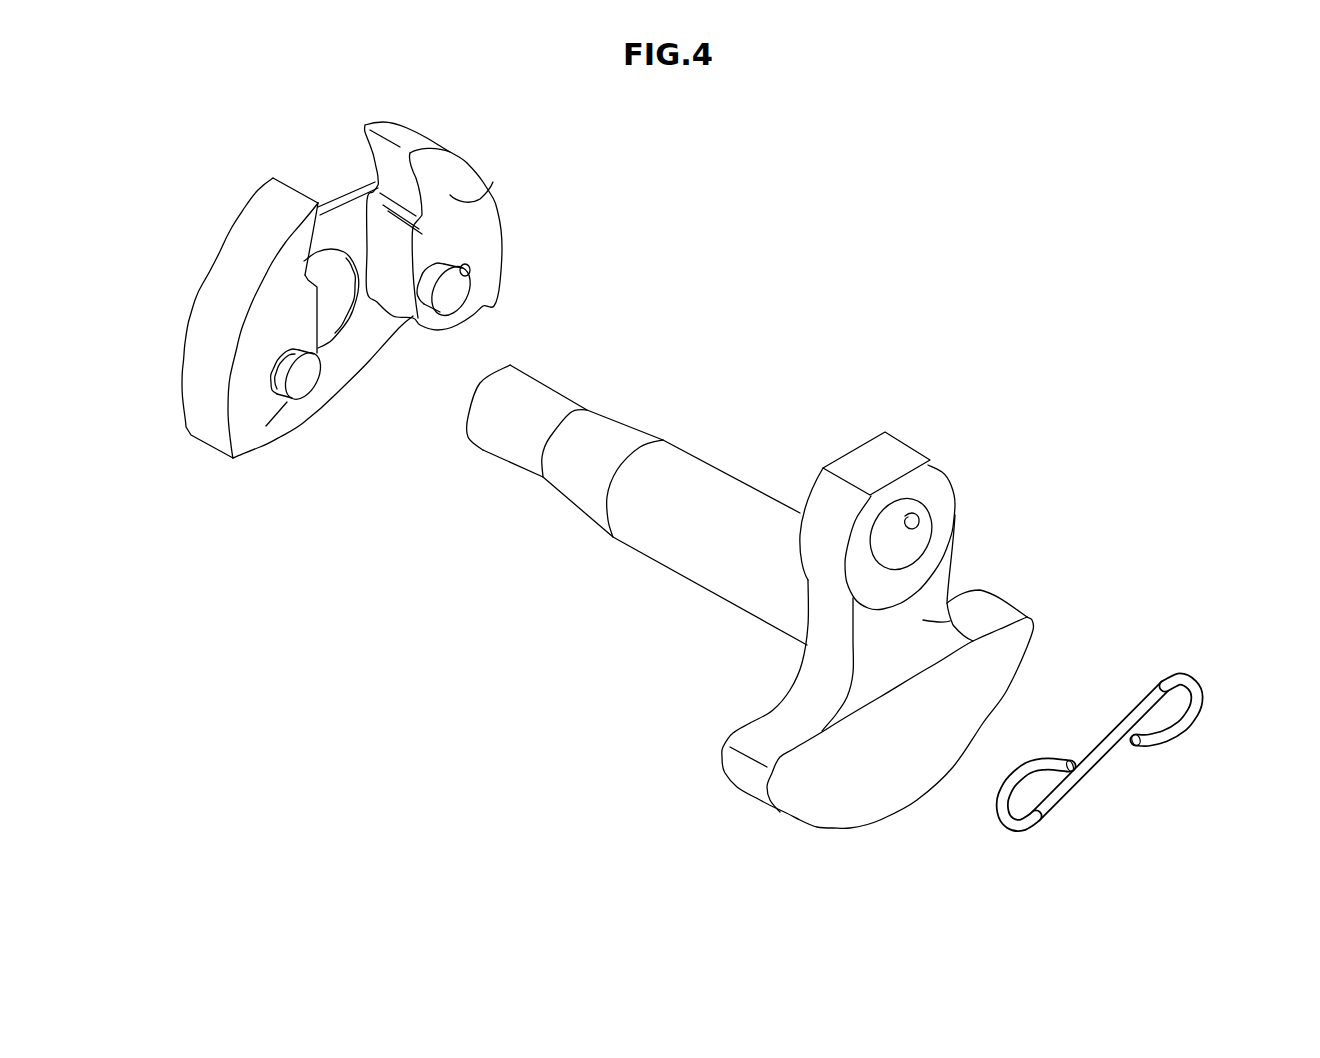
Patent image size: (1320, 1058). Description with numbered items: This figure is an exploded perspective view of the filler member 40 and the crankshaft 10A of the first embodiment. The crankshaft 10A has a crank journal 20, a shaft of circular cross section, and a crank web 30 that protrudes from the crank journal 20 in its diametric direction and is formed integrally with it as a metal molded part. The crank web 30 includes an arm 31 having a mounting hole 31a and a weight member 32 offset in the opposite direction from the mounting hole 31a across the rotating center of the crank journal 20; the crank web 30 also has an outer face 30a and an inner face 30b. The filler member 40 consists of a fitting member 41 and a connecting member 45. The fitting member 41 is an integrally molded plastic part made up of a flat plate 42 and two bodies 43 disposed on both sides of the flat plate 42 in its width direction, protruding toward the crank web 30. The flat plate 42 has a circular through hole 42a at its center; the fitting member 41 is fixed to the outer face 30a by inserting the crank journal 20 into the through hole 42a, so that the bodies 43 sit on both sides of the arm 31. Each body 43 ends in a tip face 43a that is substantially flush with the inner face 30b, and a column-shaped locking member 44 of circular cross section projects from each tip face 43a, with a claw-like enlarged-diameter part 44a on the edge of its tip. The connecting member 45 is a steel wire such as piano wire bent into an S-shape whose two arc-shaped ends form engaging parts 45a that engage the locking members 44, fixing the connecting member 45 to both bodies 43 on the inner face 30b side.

The crankshaft 10A is at (855, 311).
The crank journal 20 is at (611, 401).
The crank web 30 is at (858, 426).
The outer face 30a is at (808, 612).
The inner face 30b is at (983, 592).
The arm 31 is at (940, 573).
The mounting hole 31a is at (947, 510).
The weight member 32 is at (838, 808).
The filler member 40 is at (185, 150).
The fitting member 41 is at (480, 156).
The flat plate 42 is at (347, 370).
The through hole 42a is at (340, 306).
The body 43 is at (222, 287).
The tip face 43a is at (248, 342).
The locking member 44 is at (305, 388).
The enlarged-diameter part 44a is at (281, 402).
The connecting member 45 is at (1098, 780).
The engaging part 45a is at (1204, 703).